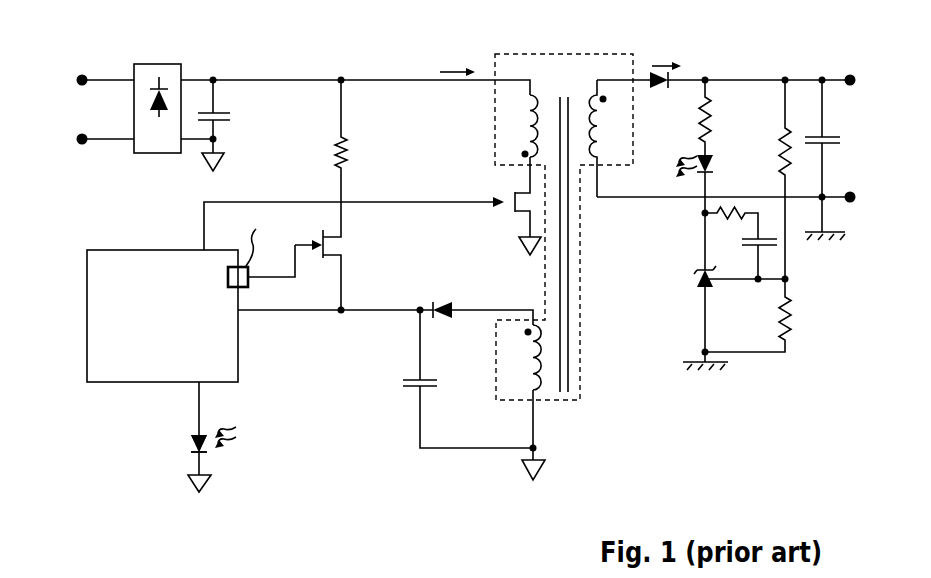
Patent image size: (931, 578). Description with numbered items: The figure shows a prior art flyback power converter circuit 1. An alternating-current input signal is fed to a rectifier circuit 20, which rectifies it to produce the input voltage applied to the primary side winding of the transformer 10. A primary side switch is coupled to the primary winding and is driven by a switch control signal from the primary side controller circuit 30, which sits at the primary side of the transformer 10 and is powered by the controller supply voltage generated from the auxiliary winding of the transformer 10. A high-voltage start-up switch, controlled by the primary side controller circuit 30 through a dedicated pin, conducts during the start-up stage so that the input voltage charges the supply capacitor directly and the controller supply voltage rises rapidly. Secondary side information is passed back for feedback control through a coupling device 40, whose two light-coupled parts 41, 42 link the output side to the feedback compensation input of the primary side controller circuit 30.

The flyback power converter circuit 1 is at (417, 38).
The transformer 10 is at (582, 54).
The rectifier circuit 20 is at (149, 136).
The primary side controller circuit 30 is at (150, 377).
The coupling device 40 is at (451, 335).
The optocoupler phototransistor/LED (primary side) 41 is at (192, 441).
The optocoupler LED (secondary side) 42 is at (712, 164).